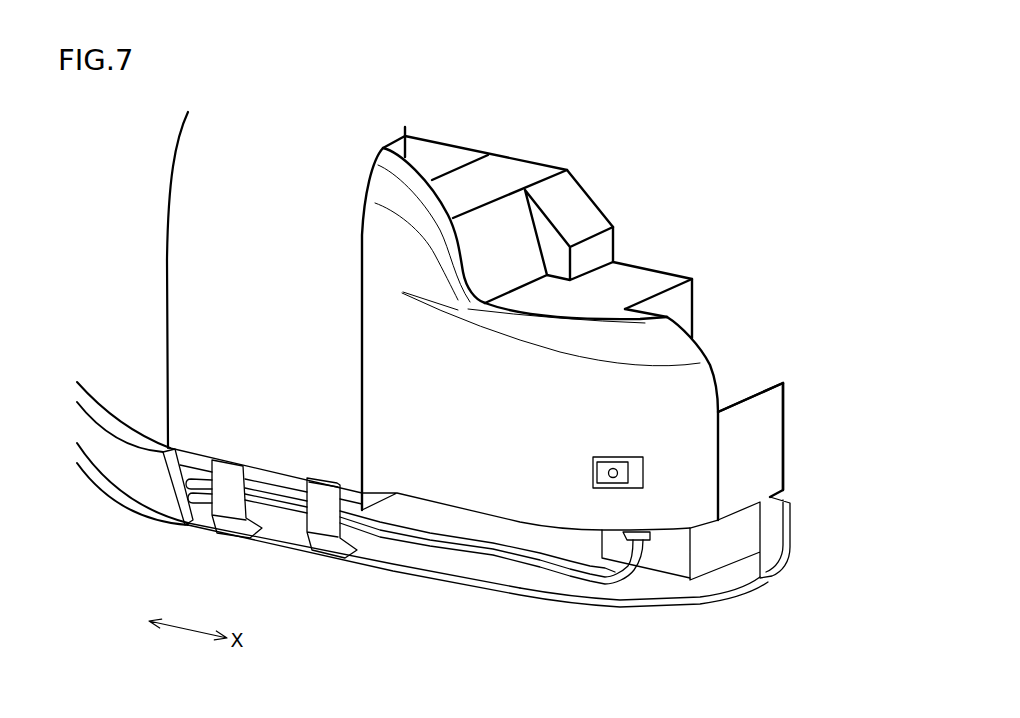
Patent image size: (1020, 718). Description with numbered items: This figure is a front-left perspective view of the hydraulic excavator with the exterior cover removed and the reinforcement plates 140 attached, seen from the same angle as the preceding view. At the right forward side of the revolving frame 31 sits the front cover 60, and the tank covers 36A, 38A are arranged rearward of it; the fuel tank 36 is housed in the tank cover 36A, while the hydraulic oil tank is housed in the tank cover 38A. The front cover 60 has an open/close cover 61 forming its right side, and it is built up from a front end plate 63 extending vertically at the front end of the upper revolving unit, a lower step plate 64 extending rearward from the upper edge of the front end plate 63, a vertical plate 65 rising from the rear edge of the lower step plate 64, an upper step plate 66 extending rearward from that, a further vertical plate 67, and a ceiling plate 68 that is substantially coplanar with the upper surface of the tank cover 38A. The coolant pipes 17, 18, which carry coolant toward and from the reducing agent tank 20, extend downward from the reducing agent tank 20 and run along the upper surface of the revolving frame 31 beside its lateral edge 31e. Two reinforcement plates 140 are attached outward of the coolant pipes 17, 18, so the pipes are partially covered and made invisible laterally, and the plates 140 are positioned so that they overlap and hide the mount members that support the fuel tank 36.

The front cover 60 is at (699, 177).
The tank cover 38A is at (432, 155).
The ceiling plate 68 is at (505, 175).
The vertical plate 67 is at (510, 240).
The upper step plate 66 is at (625, 285).
The vertical plate 65 is at (670, 307).
The lower step plate 64 is at (735, 385).
The front end plate 63 is at (758, 450).
The tank cover 36A is at (232, 155).
The fuel tank 36 is at (277, 478).
The reinforcement plate 140 is at (230, 503).
The coolant pipe 17 is at (430, 538).
The coolant pipe 18 is at (467, 552).
The lateral edge 31e is at (393, 564).
The revolving frame 31 is at (648, 587).
The open/close cover 61 is at (675, 475).
The reducing agent tank 20 is at (710, 542).